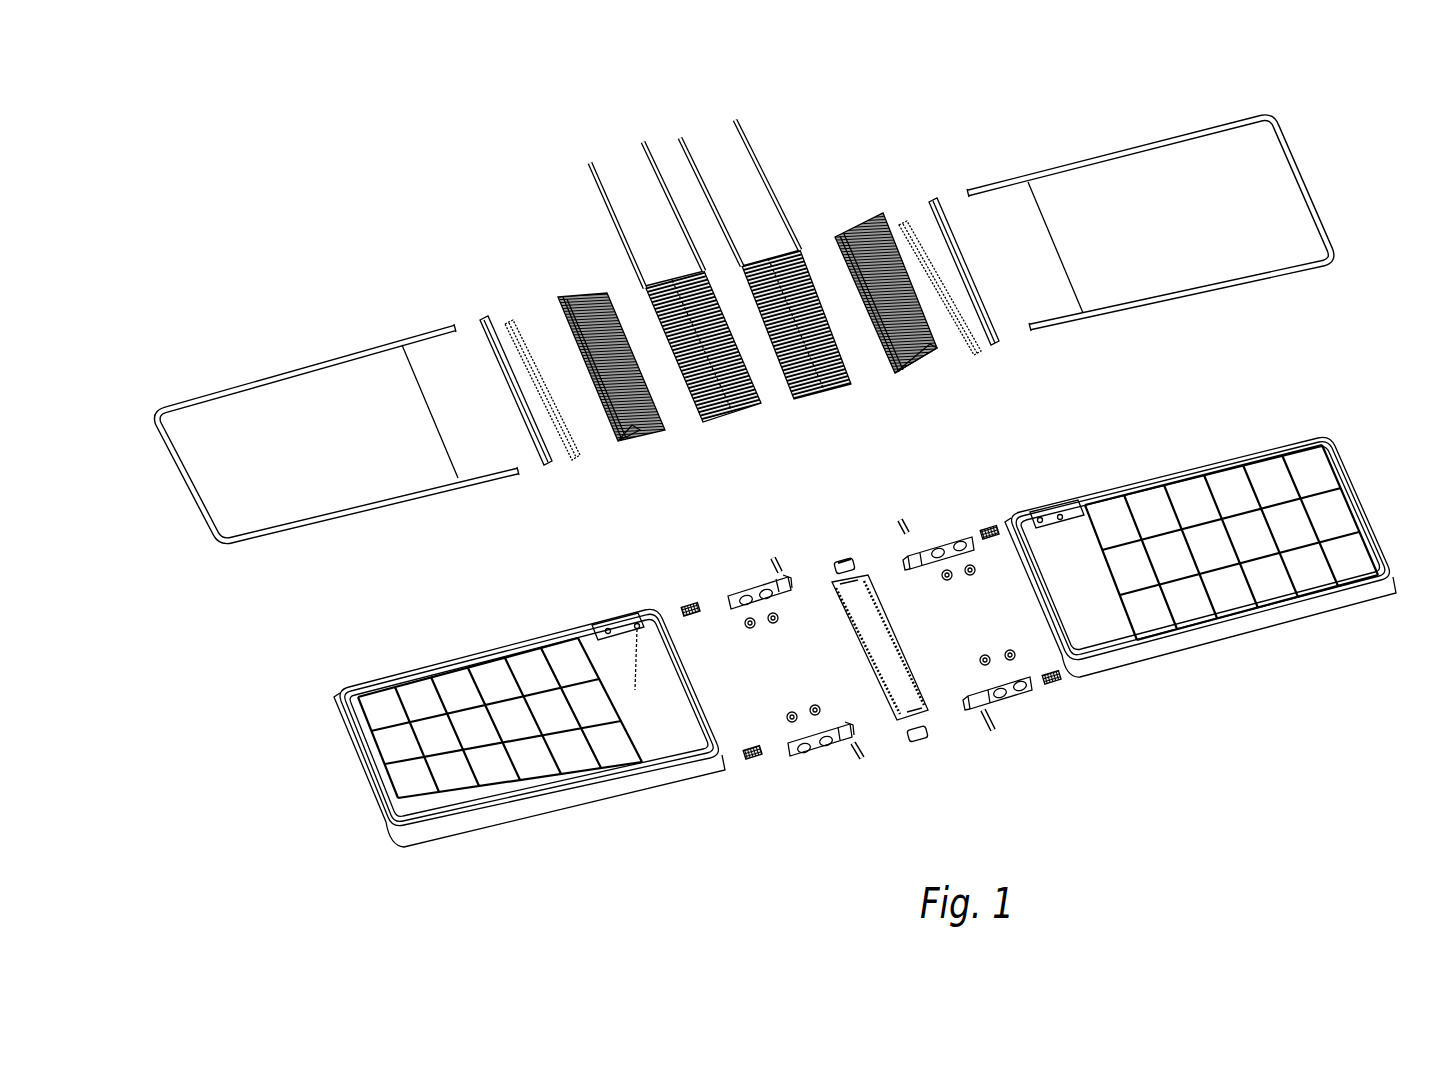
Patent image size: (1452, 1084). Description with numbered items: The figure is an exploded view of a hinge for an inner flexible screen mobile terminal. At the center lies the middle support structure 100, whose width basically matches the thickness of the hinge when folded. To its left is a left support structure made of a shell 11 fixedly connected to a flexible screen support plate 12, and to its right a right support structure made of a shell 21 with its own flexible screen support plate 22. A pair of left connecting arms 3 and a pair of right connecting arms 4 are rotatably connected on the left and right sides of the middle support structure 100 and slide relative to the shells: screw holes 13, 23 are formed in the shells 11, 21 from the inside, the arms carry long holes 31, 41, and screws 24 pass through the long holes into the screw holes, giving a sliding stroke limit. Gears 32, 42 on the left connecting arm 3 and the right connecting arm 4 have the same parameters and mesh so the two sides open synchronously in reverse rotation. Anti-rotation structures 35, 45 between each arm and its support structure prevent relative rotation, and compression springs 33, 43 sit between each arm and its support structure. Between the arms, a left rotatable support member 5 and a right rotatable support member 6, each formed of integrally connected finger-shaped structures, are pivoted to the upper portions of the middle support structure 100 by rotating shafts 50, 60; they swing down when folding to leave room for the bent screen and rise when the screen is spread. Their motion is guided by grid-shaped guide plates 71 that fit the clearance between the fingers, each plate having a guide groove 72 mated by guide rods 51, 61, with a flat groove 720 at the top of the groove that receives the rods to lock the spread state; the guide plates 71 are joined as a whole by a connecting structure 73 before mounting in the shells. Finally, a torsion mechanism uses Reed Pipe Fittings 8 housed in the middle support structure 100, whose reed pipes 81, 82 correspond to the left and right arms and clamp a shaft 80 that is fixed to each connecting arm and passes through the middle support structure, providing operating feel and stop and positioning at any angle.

The shell 11 is at (392, 730).
The flexible screen support plate 12 is at (290, 418).
The screw hole 13 is at (606, 629).
The shell 21 is at (1285, 485).
The flexible screen support plate 22 is at (1257, 213).
The screw hole 23 is at (1060, 517).
The screw 24 is at (970, 575).
The left connecting arm 3 is at (730, 681).
The long hole 31 is at (733, 600).
The gear 32 is at (845, 713).
The compression spring 33 is at (682, 608).
The anti-rotation structure 35 is at (733, 610).
The right connecting arm 4 is at (1049, 570).
The long hole 41 is at (967, 537).
The gear 42 is at (973, 688).
The compression spring 43 is at (1060, 680).
The anti-rotation structure 45 is at (970, 552).
The left rotatable support member 5 is at (643, 284).
The rotating shaft 50 is at (673, 212).
The guide rod 51 is at (622, 227).
The right rotatable support member 6 is at (793, 253).
The rotating shaft 60 is at (673, 212).
The guide rod 61 is at (793, 253).
The guide plate 71 is at (568, 292).
The guide groove 72 is at (920, 353).
The flat groove 720 is at (937, 347).
The connecting structure 73 is at (510, 325).
The Reed Pipe Fitting 8 is at (849, 600).
The shaft 80 is at (968, 519).
The reed pipe 81 is at (835, 563).
The reed pipe 82 is at (853, 562).
The middle support structure 100 is at (897, 657).